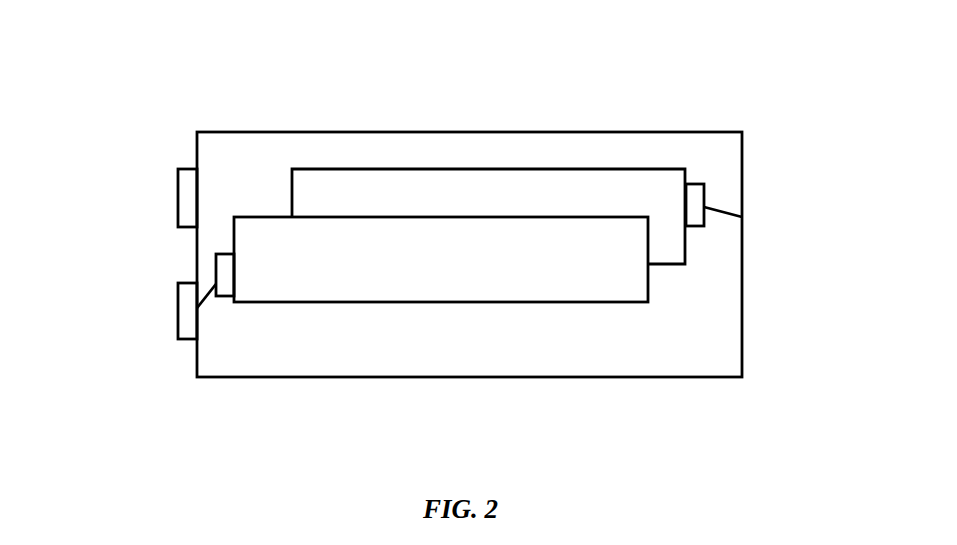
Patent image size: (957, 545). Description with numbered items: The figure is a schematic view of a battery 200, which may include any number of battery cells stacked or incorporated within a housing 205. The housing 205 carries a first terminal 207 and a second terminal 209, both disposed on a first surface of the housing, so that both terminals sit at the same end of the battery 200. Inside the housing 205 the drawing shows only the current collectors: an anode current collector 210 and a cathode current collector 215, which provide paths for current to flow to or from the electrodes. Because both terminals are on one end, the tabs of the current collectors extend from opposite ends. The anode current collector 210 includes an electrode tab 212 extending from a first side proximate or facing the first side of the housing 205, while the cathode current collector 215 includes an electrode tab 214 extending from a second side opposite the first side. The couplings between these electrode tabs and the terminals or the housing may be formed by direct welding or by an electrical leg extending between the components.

The battery 200 is at (108, 90).
The housing 205 is at (452, 132).
The first terminal 207 is at (178, 308).
The second terminal 209 is at (178, 224).
The anode current collector 210 is at (488, 302).
The electrode tab 212 is at (223, 297).
The electrode tab 214 is at (704, 198).
The cathode current collector 215 is at (543, 169).